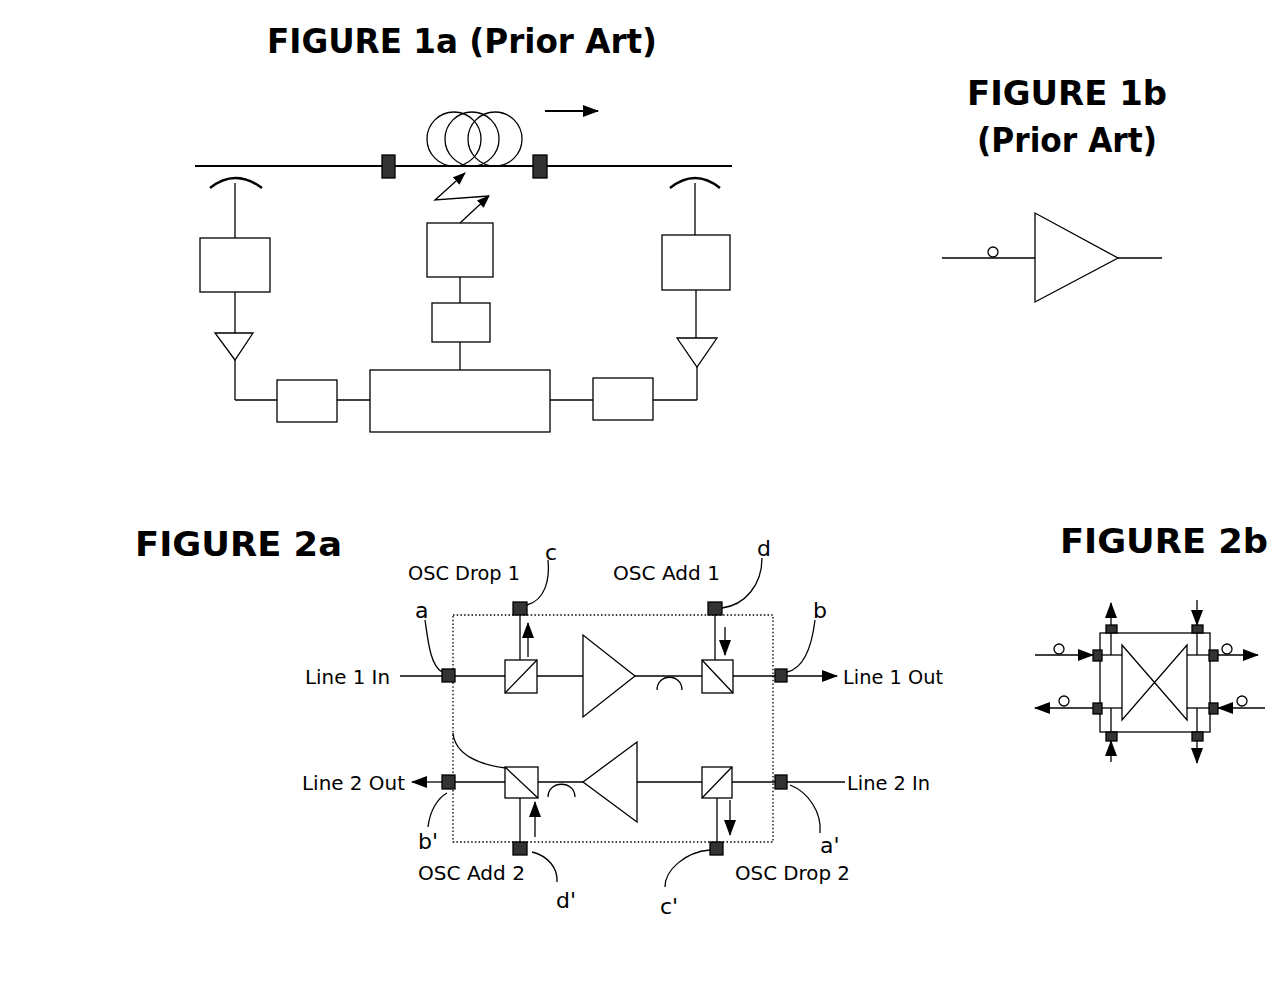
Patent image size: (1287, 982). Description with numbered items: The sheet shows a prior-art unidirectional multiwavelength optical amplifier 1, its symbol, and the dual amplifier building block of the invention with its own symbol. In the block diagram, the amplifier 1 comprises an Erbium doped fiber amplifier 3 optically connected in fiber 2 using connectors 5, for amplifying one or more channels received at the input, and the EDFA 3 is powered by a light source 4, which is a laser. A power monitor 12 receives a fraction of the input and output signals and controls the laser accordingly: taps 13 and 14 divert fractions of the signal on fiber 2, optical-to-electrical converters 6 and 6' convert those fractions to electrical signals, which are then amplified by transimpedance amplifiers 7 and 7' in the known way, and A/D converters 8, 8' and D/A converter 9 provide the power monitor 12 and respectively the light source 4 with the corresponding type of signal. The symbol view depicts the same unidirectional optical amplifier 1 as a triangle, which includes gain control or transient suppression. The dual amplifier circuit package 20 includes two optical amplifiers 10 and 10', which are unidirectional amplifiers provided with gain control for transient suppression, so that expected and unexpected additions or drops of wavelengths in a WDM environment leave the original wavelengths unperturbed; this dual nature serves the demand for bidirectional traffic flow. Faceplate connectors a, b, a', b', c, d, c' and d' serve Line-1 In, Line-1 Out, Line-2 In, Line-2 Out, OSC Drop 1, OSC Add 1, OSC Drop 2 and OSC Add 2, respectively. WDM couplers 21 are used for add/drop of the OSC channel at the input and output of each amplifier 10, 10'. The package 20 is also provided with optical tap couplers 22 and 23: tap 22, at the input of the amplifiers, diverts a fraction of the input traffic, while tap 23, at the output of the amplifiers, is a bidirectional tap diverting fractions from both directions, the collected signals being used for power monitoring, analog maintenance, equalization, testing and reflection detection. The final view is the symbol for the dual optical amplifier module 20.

In FIG. 1A, the unidirectional optical amplifier 1 is at (757, 178).
In FIG. 1B, the unidirectional optical amplifier 1 is at (990, 297).
In FIG. 1A, the fiber 2 is at (353, 165).
In FIG. 1A, the Erbium doped fiber amplifier 3 is at (443, 108).
In FIG. 1A, the light source 4 is at (490, 243).
In FIG. 1A, the connectors 5 is at (380, 175).
In FIG. 1A, the optical-to-electrical converter 6 is at (211, 287).
In FIG. 1A, the optical-to-electrical converter 6' is at (711, 279).
In FIG. 1A, the transimpedance amplifier 7 is at (229, 356).
In FIG. 1A, the transimpedance amplifier 7' is at (709, 345).
In FIG. 1A, the A/D converter 8 is at (288, 431).
In FIG. 1A, the A/D converter 8' is at (645, 426).
In FIG. 1A, the D/A converter 9 is at (492, 322).
In FIG. 2A, the optical amplifier 10 is at (619, 672).
In FIG. 2A, the optical amplifier 10' is at (620, 821).
In FIG. 1A, the power monitor 12 is at (403, 433).
In FIG. 1A, the tap 13 is at (217, 177).
In FIG. 1A, the tap 14 is at (670, 183).
In FIG. 2A, the dual amplifier circuit package 20 is at (358, 637).
In FIG. 2B, the dual amplifier circuit package 20 is at (1130, 758).
In FIG. 2A, the WDM coupler 21 is at (505, 692).
In FIG. 2A, the optical tap coupler 22 is at (575, 690).
In FIG. 2A, the optical tap coupler 23 is at (657, 680).